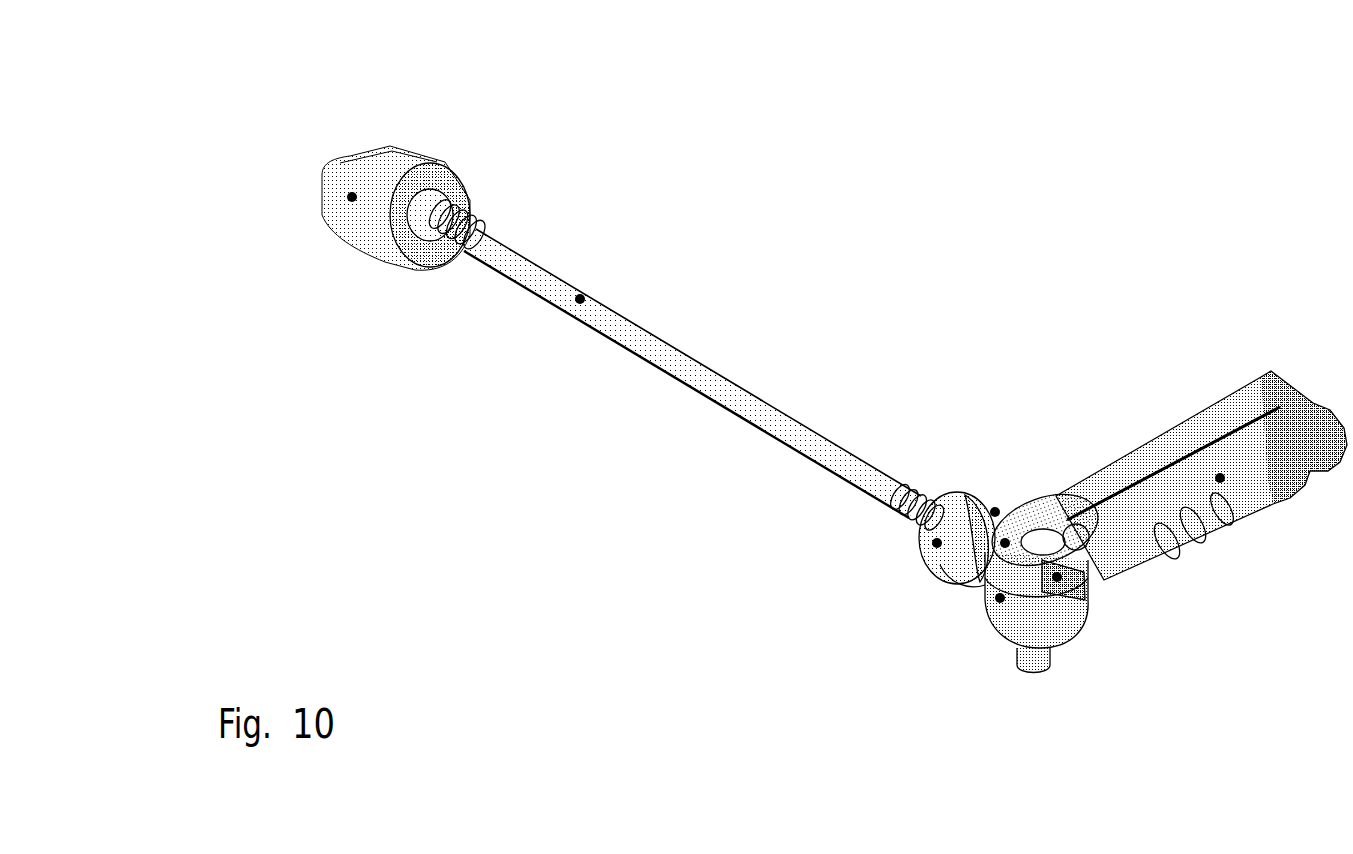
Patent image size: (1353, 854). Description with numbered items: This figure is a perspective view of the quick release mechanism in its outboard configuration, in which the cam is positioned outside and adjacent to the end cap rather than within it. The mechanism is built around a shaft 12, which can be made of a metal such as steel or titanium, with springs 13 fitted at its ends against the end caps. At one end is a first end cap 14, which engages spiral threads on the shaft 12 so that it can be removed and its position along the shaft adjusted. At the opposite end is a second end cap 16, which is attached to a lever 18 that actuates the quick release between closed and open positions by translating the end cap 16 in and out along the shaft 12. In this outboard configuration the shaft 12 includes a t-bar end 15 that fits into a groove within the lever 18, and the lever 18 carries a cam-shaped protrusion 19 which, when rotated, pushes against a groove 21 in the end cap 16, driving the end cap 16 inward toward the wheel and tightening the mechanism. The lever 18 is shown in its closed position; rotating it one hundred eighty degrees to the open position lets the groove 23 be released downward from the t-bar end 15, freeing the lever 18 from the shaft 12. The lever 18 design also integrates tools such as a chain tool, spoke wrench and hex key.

The shaft 12 is at (580, 299).
The springs 13 is at (470, 172).
The first end cap 14 is at (352, 197).
The t-bar end 15 is at (1057, 577).
The second end cap 16 is at (937, 543).
The lever 18 is at (1220, 478).
The cam-shaped protrusion 19 is at (947, 580).
The groove 21 is at (995, 512).
The groove 23 is at (1000, 598).